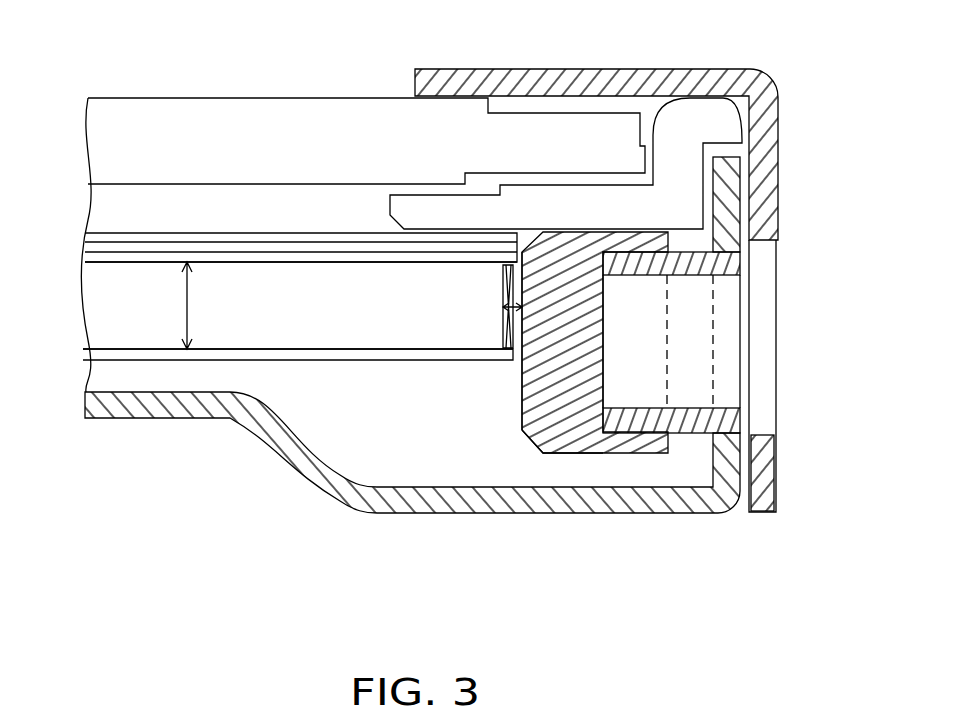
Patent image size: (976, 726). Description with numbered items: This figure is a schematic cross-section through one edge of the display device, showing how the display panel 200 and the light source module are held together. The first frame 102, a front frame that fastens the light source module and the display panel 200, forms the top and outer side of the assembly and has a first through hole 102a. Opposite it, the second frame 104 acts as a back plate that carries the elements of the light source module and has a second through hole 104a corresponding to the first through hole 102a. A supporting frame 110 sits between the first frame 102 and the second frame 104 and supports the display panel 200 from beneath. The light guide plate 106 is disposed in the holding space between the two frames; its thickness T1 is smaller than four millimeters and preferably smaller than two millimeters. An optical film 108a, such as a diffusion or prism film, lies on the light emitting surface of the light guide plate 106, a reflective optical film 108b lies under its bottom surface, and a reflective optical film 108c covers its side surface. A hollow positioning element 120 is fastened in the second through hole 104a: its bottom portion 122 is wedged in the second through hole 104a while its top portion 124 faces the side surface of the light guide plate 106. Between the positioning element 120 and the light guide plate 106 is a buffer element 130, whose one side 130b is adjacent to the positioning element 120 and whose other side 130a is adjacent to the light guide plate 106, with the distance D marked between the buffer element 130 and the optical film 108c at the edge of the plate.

The display panel 200 is at (198, 123).
The distance D is at (515, 302).
The supporting frame 110 is at (690, 112).
The first frame 102 is at (765, 156).
The first through hole 102a is at (762, 242).
The bottom portion 122 is at (740, 418).
The second frame 104 is at (688, 497).
The thickness of the light guide plate T1 is at (100, 393).
The second through hole 104a is at (727, 280).
The positioning element 120 is at (643, 422).
The buffer element 130 is at (547, 425).
The another side of the buffer element 130a is at (511, 393).
The one side of the buffer element 130b is at (611, 380).
The top portion 124 is at (605, 412).
The optical film 108a is at (76, 229).
The light guide plate 106 is at (110, 309).
The optical film 108b is at (90, 355).
The optical film 108c is at (505, 330).